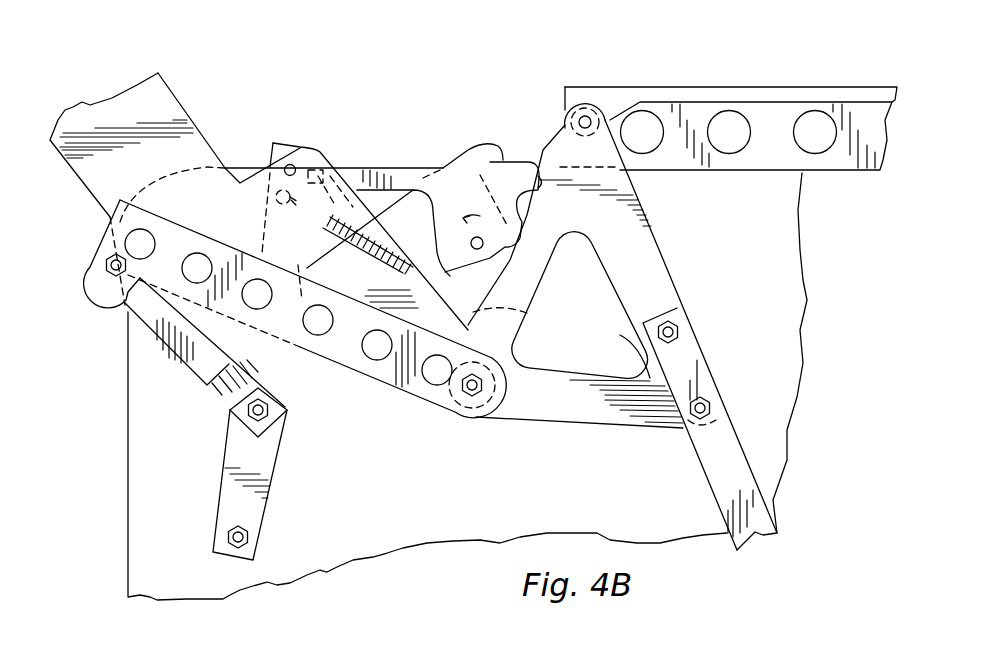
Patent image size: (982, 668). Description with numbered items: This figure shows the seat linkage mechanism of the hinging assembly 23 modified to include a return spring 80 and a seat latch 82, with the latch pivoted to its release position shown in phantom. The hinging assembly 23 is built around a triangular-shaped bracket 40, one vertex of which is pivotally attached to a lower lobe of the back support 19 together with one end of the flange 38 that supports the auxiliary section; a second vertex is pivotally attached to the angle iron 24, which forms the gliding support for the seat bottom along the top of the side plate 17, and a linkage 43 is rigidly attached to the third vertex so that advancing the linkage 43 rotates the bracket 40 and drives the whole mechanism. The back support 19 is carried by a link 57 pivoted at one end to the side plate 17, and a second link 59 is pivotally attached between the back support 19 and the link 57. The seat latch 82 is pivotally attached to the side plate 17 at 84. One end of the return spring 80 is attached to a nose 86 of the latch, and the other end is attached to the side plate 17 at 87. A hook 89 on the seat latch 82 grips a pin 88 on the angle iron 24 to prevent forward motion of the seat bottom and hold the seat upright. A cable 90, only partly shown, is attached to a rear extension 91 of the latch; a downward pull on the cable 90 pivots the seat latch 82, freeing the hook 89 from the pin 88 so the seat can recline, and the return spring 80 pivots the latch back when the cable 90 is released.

The side plate 17 is at (783, 350).
The back support 19 is at (165, 95).
The hinging assembly 23 is at (440, 442).
The angle iron 24 is at (763, 112).
The flange 38 is at (415, 398).
The triangular-shaped bracket 40 is at (650, 282).
The linkage 43 is at (710, 462).
The link 57 is at (267, 497).
The second link 59 is at (193, 367).
The return spring 80 is at (378, 274).
The seat latch 82 is at (465, 150).
The pivot point of seat latch 84 is at (483, 247).
The nose 86 is at (527, 313).
The spring attachment point 87 is at (313, 307).
The pin 88 is at (587, 116).
The hook 89 is at (535, 165).
The cable 90 is at (337, 168).
The rear extension 91 is at (393, 172).